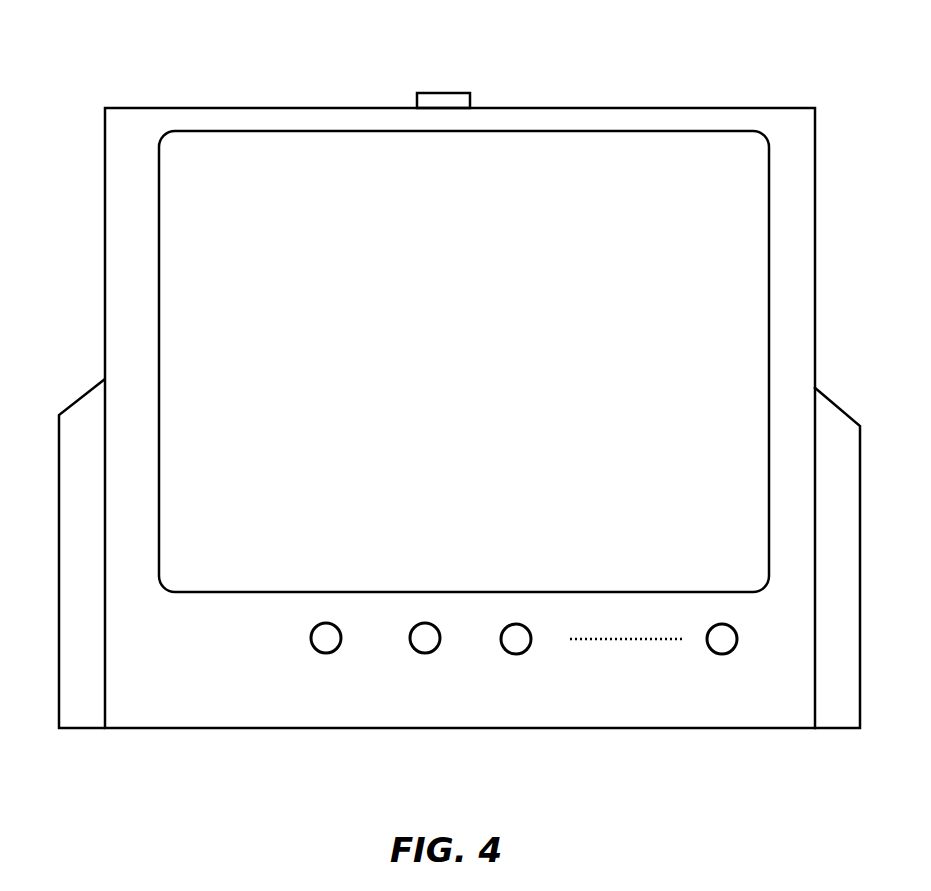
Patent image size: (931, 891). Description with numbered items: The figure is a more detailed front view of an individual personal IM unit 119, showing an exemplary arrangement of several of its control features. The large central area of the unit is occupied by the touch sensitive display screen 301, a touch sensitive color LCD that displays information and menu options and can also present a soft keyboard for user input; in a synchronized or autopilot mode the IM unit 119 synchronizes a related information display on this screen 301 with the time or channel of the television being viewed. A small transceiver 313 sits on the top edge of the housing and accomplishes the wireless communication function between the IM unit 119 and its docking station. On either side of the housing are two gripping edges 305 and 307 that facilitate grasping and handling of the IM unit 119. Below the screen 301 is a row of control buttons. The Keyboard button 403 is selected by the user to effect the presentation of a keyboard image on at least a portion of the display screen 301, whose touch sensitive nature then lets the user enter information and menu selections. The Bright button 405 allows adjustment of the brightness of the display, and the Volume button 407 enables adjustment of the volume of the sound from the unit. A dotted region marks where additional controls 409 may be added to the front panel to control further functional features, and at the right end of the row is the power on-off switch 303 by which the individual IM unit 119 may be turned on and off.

The IM unit 119 is at (627, 108).
The touch sensitive display screen 301 is at (159, 245).
The transceiver 313 is at (443, 93).
The gripping edge 305 is at (77, 398).
The gripping edge 307 is at (826, 392).
The Keyboard button 403 is at (311, 635).
The Bright button 405 is at (411, 630).
The Volume button 407 is at (505, 630).
The additional controls 409 is at (632, 642).
The power on-off switch 303 is at (738, 642).